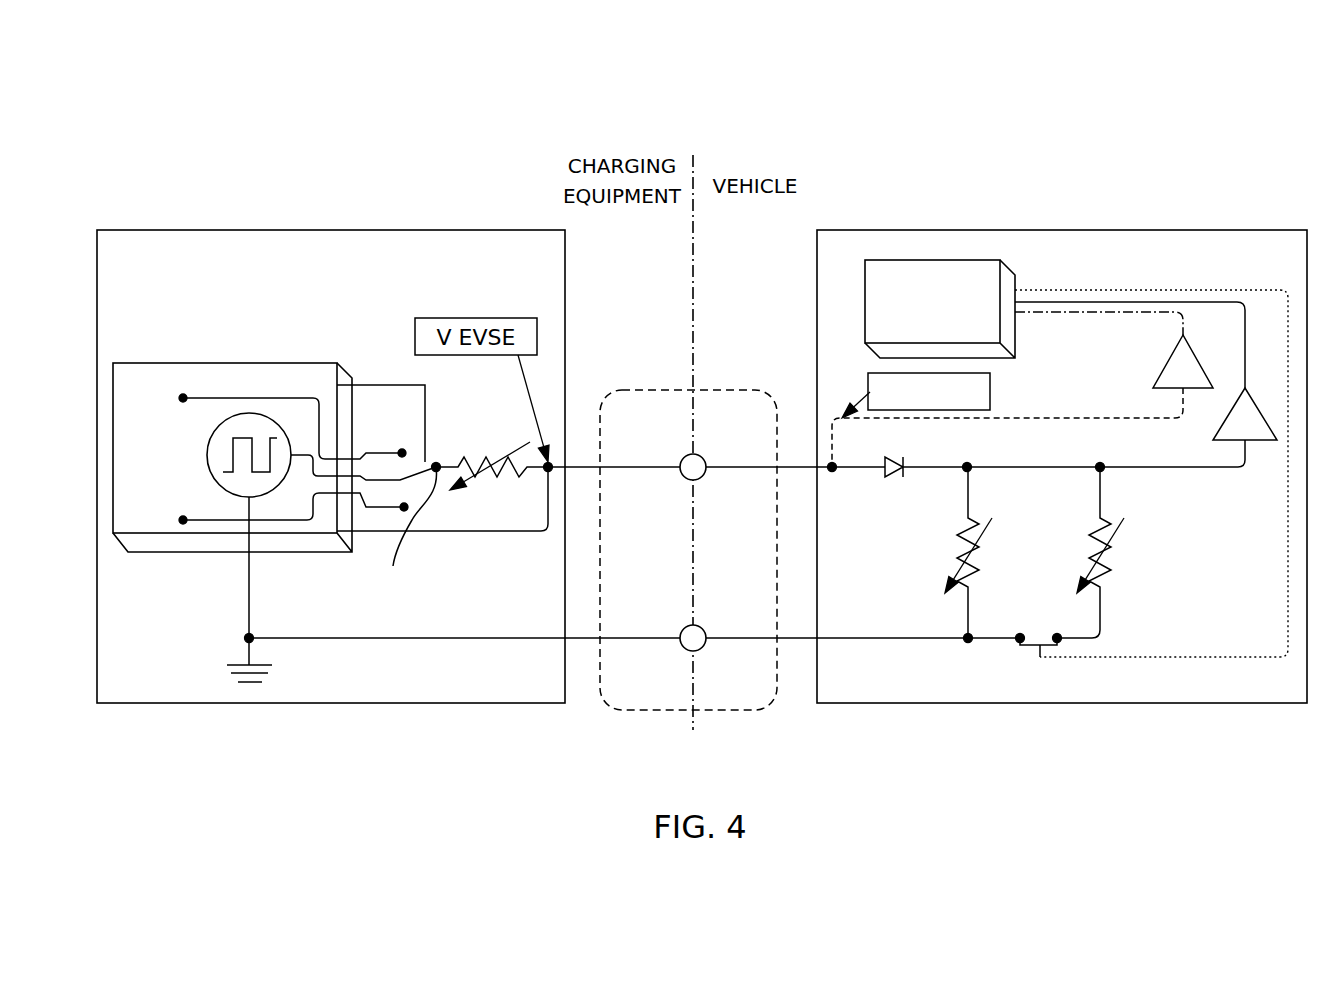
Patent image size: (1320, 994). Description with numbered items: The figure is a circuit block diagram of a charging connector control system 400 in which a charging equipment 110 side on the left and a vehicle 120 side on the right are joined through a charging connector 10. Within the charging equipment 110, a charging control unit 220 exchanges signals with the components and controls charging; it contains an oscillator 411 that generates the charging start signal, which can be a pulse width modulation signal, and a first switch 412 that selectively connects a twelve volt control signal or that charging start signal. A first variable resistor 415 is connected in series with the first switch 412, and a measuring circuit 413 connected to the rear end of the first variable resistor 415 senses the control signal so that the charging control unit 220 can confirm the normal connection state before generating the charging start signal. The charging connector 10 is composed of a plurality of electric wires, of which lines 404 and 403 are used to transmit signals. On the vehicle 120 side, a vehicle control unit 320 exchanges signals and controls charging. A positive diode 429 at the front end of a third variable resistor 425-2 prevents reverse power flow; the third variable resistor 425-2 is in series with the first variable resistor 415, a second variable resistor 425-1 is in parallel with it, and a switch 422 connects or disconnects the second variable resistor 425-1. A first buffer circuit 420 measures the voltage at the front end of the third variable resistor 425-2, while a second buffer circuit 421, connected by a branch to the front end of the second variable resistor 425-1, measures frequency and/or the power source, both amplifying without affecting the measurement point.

The charging connector control system 400 is at (597, 130).
The charging equipment 110 is at (332, 230).
The vehicle 120 is at (1062, 230).
The charging control unit 220 is at (290, 363).
The oscillator 411 is at (245, 413).
The first switch 412 is at (406, 527).
The measuring circuit 413 is at (493, 531).
The first variable resistor 415 is at (493, 462).
The charging connector 10 is at (727, 390).
The electric line 404 is at (684, 478).
The electric line 403 is at (701, 627).
The vehicle control unit 320 is at (940, 260).
The first buffer circuit 420 is at (1165, 368).
The second buffer circuit 421 is at (1262, 440).
The positive diode 429 is at (903, 460).
The second variable resistor 425-1 is at (1120, 568).
The third variable resistor 425-2 is at (960, 533).
The switch 422 is at (1028, 645).